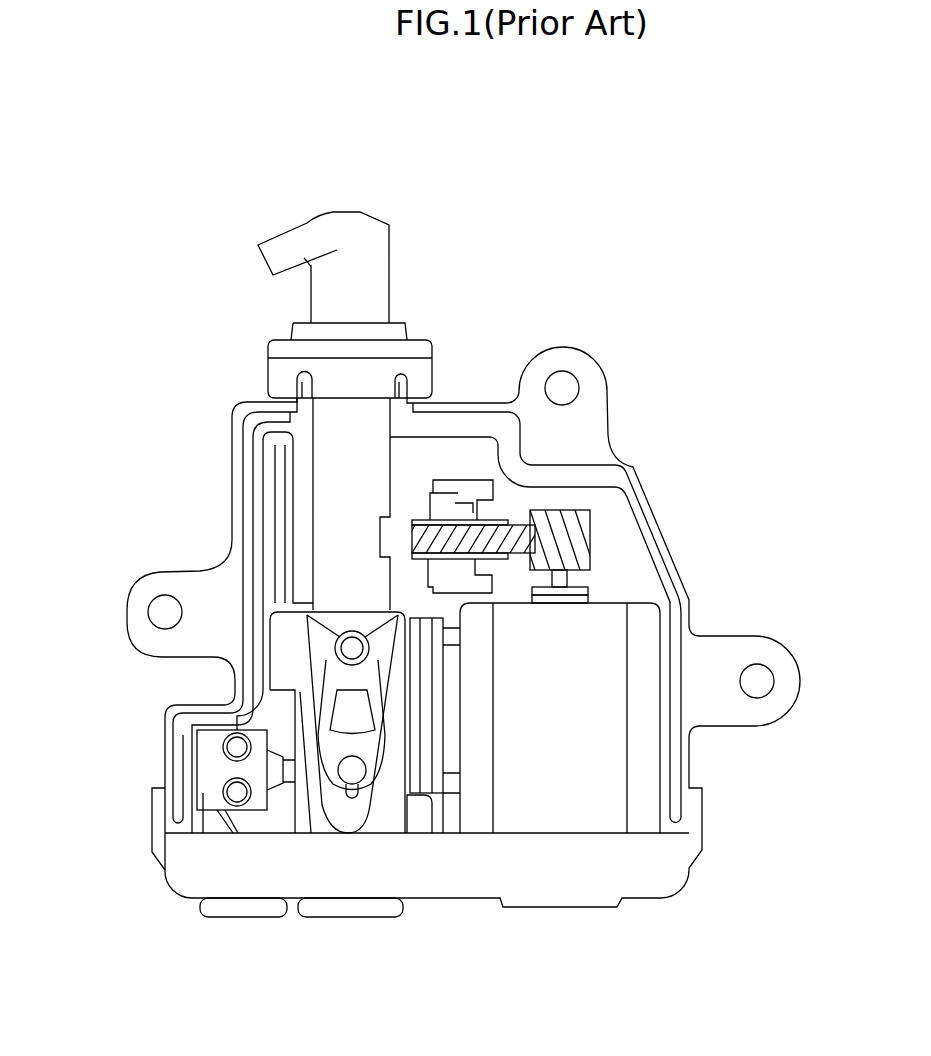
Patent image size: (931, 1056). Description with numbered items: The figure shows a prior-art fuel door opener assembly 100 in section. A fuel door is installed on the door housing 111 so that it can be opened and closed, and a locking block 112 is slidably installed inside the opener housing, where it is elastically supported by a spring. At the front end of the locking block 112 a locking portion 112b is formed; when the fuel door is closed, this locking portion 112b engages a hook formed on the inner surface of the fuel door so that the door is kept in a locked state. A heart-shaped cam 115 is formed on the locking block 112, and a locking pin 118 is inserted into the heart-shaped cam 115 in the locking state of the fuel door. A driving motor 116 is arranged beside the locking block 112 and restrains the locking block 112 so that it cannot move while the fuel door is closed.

The fuel door opener assembly 100 is at (565, 140).
The door housing 111 is at (628, 562).
The locking block 112 is at (332, 468).
The locking portion 112b is at (293, 242).
The heart-shaped cam 115 is at (320, 667).
The driving motor 116 is at (595, 730).
The locking pin 118 is at (350, 650).